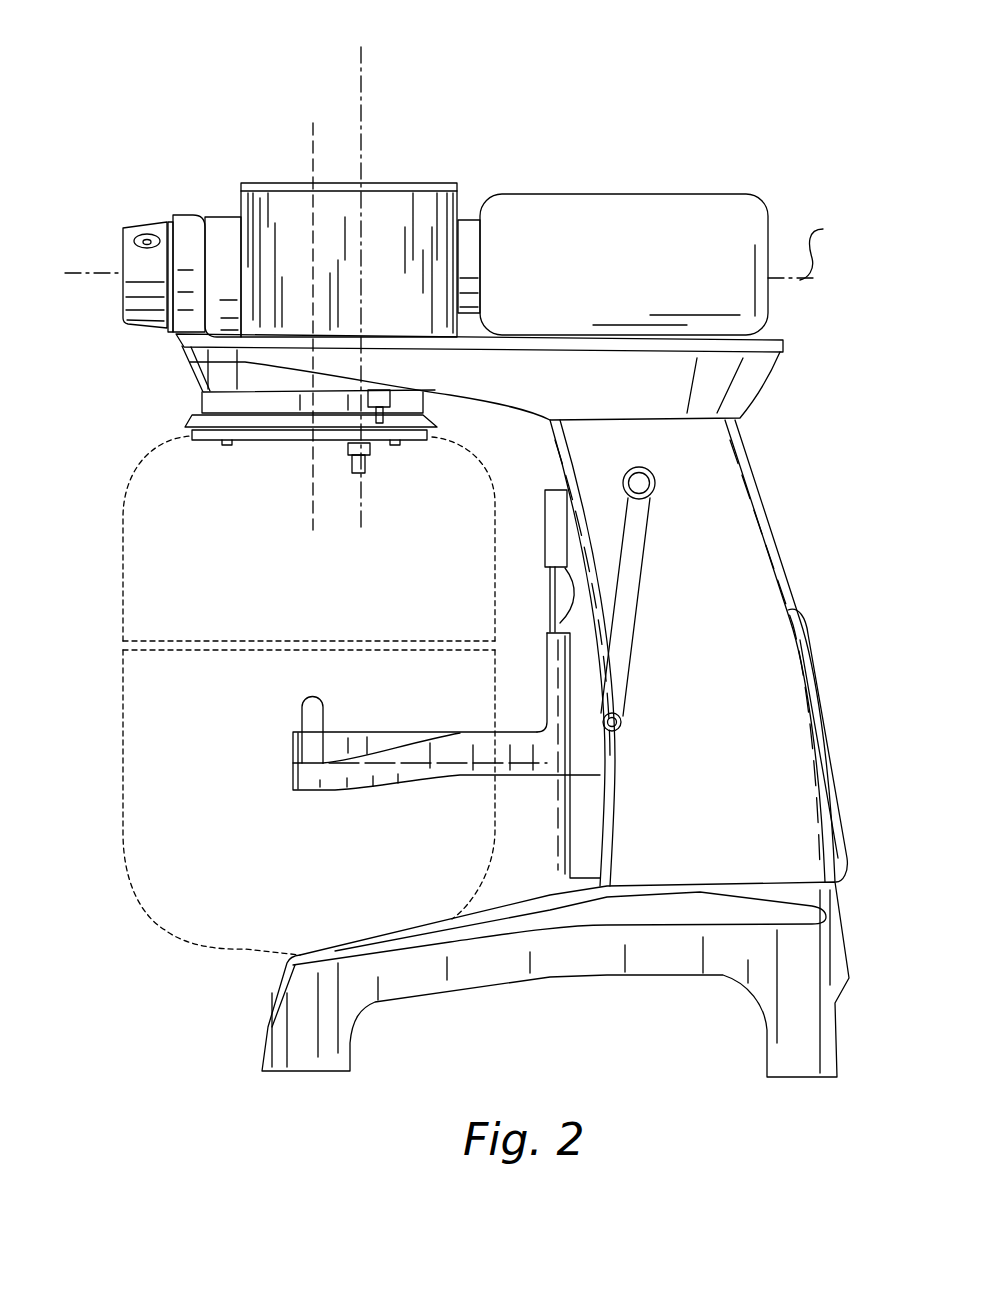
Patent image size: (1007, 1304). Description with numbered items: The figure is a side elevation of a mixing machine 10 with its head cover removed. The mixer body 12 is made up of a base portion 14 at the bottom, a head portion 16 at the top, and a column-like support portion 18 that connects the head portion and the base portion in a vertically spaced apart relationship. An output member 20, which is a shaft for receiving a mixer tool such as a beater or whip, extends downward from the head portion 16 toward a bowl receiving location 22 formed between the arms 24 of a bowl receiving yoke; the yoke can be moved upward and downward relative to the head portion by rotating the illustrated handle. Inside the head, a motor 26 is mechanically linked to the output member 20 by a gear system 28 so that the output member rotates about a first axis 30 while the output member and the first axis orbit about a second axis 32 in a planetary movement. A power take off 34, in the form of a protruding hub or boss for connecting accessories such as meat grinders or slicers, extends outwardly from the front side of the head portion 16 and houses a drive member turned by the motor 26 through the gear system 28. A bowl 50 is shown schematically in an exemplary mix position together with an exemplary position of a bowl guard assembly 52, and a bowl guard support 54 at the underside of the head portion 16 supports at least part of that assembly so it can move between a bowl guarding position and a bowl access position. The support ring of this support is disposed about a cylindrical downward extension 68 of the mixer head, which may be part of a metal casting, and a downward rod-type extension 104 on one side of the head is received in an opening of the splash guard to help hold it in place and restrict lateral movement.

The mixing machine 10 is at (754, 71).
The mixer body 12 is at (779, 480).
The base portion 14 is at (266, 998).
The head portion 16 is at (220, 147).
The support portion 18 is at (792, 593).
The output member 20 is at (368, 461).
The bowl receiving location 22 is at (215, 830).
The arms 24 is at (403, 731).
The motor 26 is at (632, 240).
The gear system 28 is at (395, 230).
The first axis 30 is at (360, 72).
The second axis 32 is at (313, 145).
The power take off 34 is at (148, 222).
The bowl 50 is at (167, 760).
The bowl guard assembly 52 is at (125, 592).
The bowl guard support 54 is at (181, 421).
The downward extension 68 is at (218, 400).
The rod-type extension 104 is at (393, 405).